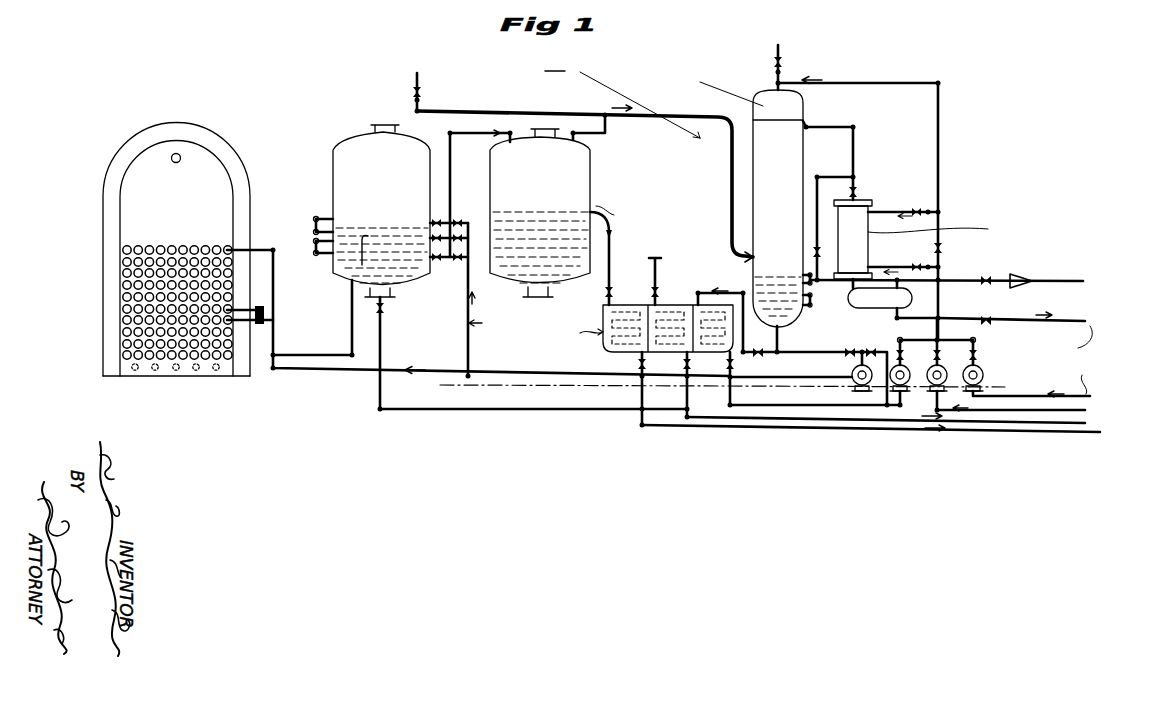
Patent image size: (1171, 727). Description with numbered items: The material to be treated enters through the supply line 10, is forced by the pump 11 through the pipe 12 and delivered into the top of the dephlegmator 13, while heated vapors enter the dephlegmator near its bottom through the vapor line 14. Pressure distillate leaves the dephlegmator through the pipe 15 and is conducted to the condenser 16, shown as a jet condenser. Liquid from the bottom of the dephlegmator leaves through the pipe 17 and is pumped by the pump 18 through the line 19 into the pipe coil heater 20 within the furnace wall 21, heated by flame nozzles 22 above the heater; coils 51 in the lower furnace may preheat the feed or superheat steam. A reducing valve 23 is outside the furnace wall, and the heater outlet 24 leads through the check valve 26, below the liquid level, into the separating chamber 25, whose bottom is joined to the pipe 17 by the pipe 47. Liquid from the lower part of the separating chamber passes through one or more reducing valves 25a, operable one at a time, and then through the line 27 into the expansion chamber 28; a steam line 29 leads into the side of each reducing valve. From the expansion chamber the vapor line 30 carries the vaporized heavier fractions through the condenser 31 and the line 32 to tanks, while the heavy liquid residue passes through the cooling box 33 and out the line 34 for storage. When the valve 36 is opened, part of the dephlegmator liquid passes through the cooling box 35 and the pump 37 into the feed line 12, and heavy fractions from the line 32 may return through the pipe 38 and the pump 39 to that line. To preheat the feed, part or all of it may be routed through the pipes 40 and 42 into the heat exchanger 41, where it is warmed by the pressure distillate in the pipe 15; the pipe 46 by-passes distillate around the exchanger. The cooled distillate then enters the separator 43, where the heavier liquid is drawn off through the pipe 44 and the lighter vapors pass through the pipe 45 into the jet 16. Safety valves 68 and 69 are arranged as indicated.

The supply line 10 is at (1092, 396).
The pump 11 is at (970, 370).
The pipe 12 is at (941, 149).
The dephlegmator 13 is at (747, 123).
The vapor line 14 is at (670, 114).
The pipe 15 is at (856, 149).
The condenser 16 is at (1040, 283).
The pipe 17 is at (780, 335).
The pump 18 is at (855, 376).
The line 19 is at (562, 370).
The pipe coil heater 20 is at (122, 260).
The furnace wall 21 is at (112, 190).
The flame nozzles 22 is at (172, 156).
The reducing valve 23 is at (258, 306).
The outlet 24 is at (262, 373).
The separating chamber 25 is at (333, 213).
The reducing valves 25a is at (438, 224).
The check valve 26 is at (338, 270).
The line 27 is at (453, 138).
The expansion chamber 28 is at (572, 282).
The steam line 29 is at (520, 366).
The vapor line 30 is at (607, 135).
The condenser 31 is at (651, 374).
The line 32 is at (748, 421).
The cooling box 33 is at (605, 374).
The line 34 is at (654, 428).
The cooling box 35 is at (695, 374).
The valve 36 is at (760, 357).
The pump 37 is at (898, 352).
The pipe 38 is at (1088, 422).
The pump 39 is at (902, 350).
The pipe 40 is at (943, 256).
The heat exchanger 41 is at (866, 238).
The pipe 42 is at (882, 226).
The separator 43 is at (873, 309).
The pipe 44 is at (1086, 314).
The pipe 45 is at (920, 286).
The pipe 46 is at (840, 178).
The pipe 47 is at (437, 411).
The coils 51 is at (120, 380).
The safety valve 68 is at (411, 93).
The safety valve 69 is at (775, 55).